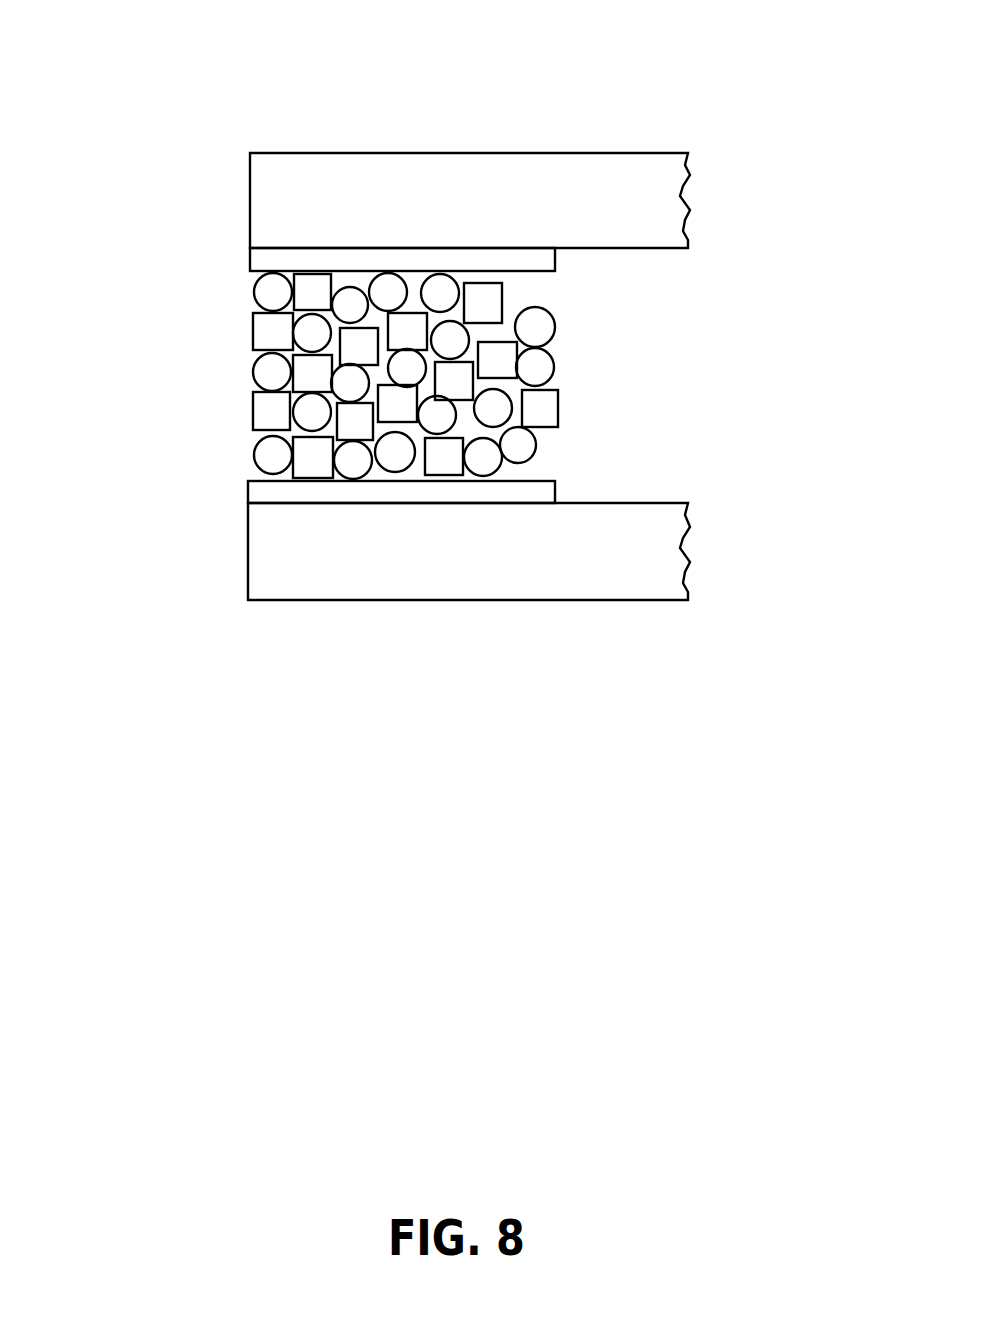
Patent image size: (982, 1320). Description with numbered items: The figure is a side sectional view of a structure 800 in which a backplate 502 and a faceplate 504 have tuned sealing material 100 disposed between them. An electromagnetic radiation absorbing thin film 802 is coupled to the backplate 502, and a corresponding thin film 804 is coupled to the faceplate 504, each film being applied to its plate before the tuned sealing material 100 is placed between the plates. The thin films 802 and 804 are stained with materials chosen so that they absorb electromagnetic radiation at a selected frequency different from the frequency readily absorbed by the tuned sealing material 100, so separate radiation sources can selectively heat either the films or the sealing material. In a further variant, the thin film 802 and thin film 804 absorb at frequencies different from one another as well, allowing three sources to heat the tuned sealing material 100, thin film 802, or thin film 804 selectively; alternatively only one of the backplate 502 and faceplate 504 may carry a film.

The structure 800 is at (695, 98).
The backplate 502 is at (293, 200).
The electromagnetic radiation absorbing thin film 802 is at (542, 265).
The tuned sealing material 100 is at (227, 276).
The electromagnetic radiation absorbing thin film 804 is at (530, 491).
The faceplate 504 is at (382, 565).